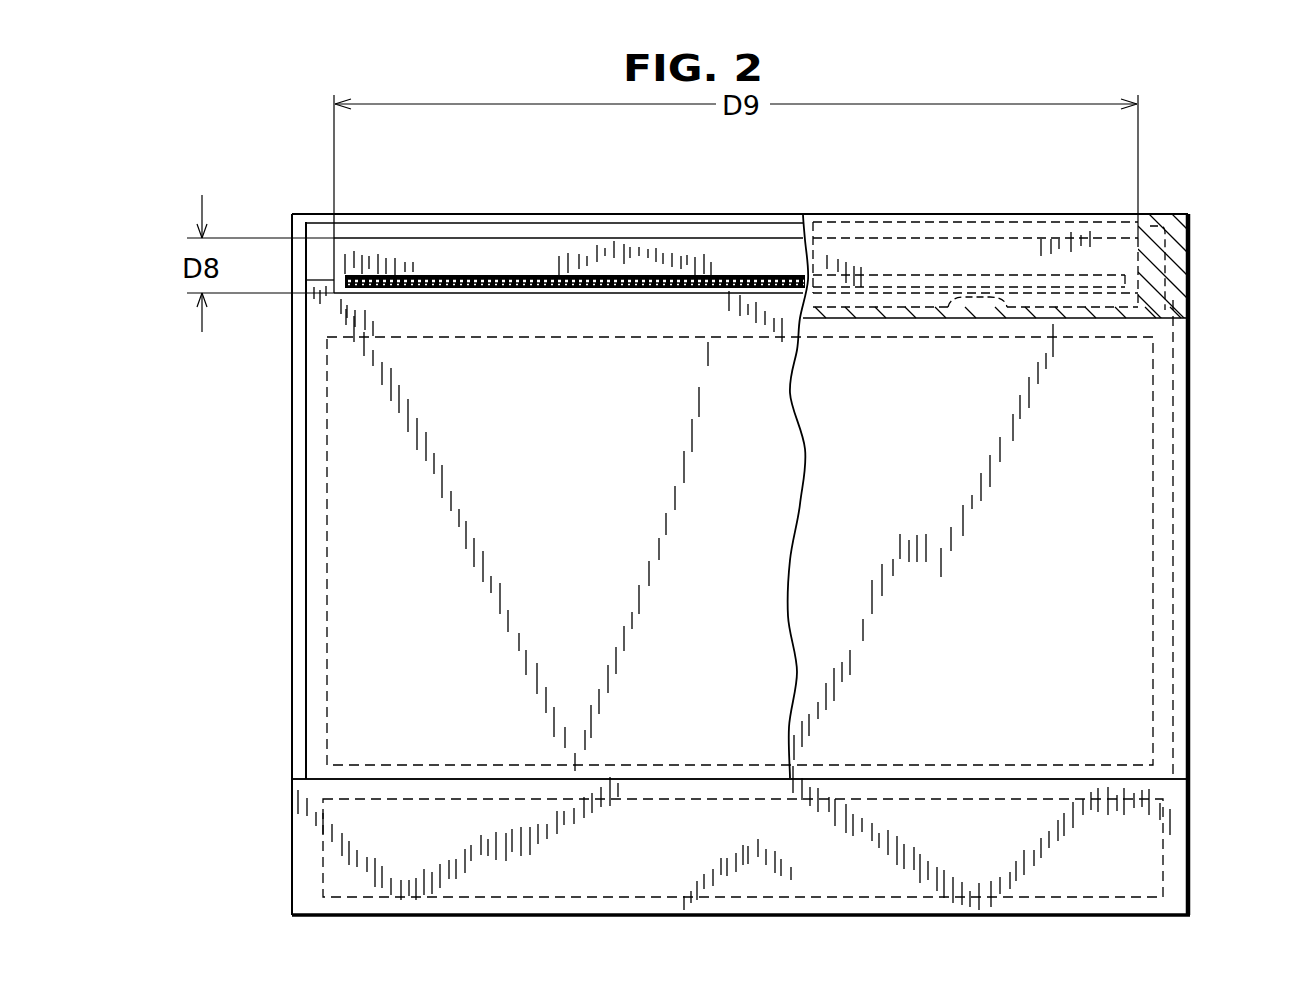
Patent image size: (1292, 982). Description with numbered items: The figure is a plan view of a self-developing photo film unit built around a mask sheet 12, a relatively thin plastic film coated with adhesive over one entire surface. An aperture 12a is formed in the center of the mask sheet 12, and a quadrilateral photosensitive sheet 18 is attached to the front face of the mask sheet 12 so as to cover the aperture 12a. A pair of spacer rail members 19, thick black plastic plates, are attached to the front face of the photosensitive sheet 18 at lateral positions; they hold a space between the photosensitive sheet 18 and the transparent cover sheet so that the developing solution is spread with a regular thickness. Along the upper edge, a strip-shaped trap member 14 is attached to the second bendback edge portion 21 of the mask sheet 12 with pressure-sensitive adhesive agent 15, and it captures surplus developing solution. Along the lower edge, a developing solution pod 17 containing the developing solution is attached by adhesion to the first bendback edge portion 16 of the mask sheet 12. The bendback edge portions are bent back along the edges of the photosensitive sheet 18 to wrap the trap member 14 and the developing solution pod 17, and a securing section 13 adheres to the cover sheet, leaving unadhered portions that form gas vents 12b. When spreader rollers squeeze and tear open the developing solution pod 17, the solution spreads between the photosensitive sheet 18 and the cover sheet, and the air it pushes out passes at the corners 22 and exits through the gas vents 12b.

The mask sheet 12 is at (992, 192).
The aperture 12a is at (328, 620).
The gas vents 12b is at (976, 320).
The securing section 13 is at (1178, 307).
The trap member 14 is at (524, 262).
The pressure-sensitive adhesive agent 15 is at (597, 295).
The first bendback edge portion 16 is at (1176, 845).
The developing solution pod 17 is at (657, 895).
The photosensitive sheet 18 is at (337, 315).
The spacer rail members 19 is at (298, 536).
The second bendback edge portion 21 is at (888, 234).
The corners 22 is at (1153, 252).